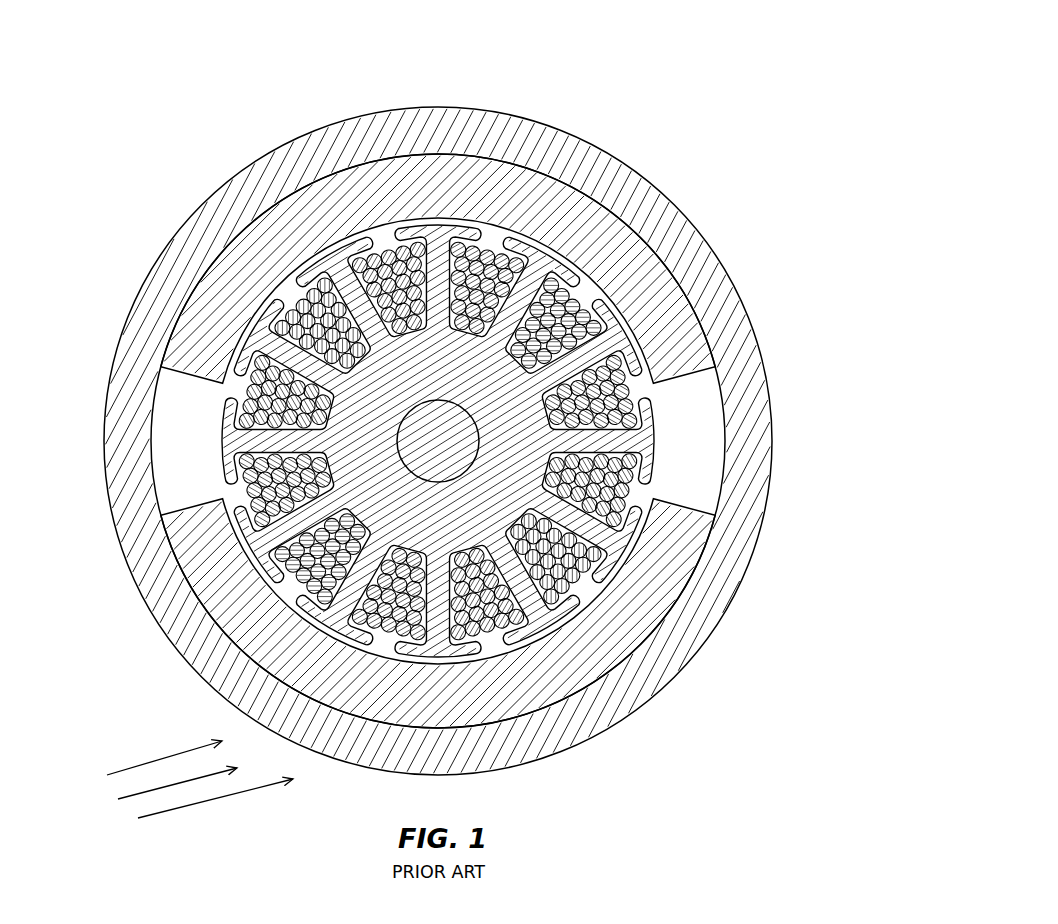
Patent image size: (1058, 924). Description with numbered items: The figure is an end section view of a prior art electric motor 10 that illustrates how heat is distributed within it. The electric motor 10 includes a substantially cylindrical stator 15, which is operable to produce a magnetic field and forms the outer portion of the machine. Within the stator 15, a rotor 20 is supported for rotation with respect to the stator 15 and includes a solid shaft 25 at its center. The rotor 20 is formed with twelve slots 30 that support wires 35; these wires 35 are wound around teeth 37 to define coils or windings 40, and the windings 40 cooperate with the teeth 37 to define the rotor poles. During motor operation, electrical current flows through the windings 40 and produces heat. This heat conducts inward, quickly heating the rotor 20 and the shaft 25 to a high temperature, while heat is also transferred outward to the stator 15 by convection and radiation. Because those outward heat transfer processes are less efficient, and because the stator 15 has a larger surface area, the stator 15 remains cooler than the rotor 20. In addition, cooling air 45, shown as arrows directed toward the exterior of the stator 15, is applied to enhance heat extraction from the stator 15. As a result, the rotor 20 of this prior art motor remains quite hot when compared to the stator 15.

The electric motor 10 is at (442, 403).
The stator 15 is at (260, 187).
The rotor 20 is at (442, 441).
The solid shaft 25 is at (403, 461).
The slots 30 is at (646, 387).
The wires 35 is at (478, 474).
The teeth 37 is at (258, 338).
The windings 40 is at (637, 496).
The cooling air 45 is at (138, 797).